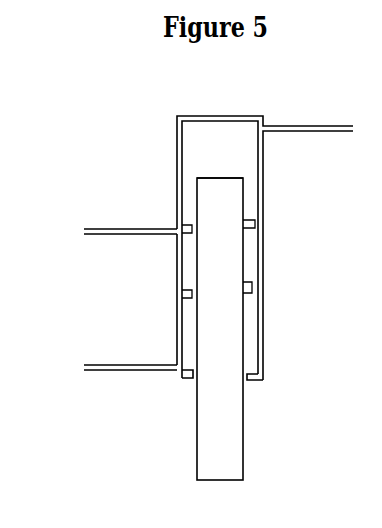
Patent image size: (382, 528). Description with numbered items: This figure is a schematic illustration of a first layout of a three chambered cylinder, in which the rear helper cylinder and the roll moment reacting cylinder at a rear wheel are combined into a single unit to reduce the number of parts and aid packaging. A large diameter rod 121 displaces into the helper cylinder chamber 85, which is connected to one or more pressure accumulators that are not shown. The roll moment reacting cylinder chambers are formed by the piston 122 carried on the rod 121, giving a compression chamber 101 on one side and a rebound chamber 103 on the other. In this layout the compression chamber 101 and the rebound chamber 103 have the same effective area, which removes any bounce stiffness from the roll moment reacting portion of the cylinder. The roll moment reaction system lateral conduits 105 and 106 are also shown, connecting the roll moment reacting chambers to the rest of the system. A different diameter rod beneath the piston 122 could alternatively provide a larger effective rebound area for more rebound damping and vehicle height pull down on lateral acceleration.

The helper cylinder chamber 85 is at (200, 144).
The compression chamber 101 is at (246, 253).
The rebound chamber 103 is at (248, 340).
The lateral conduit 105 is at (143, 234).
The lateral conduit 106 is at (153, 368).
The large diameter rod 121 is at (232, 197).
The piston 122 is at (189, 296).